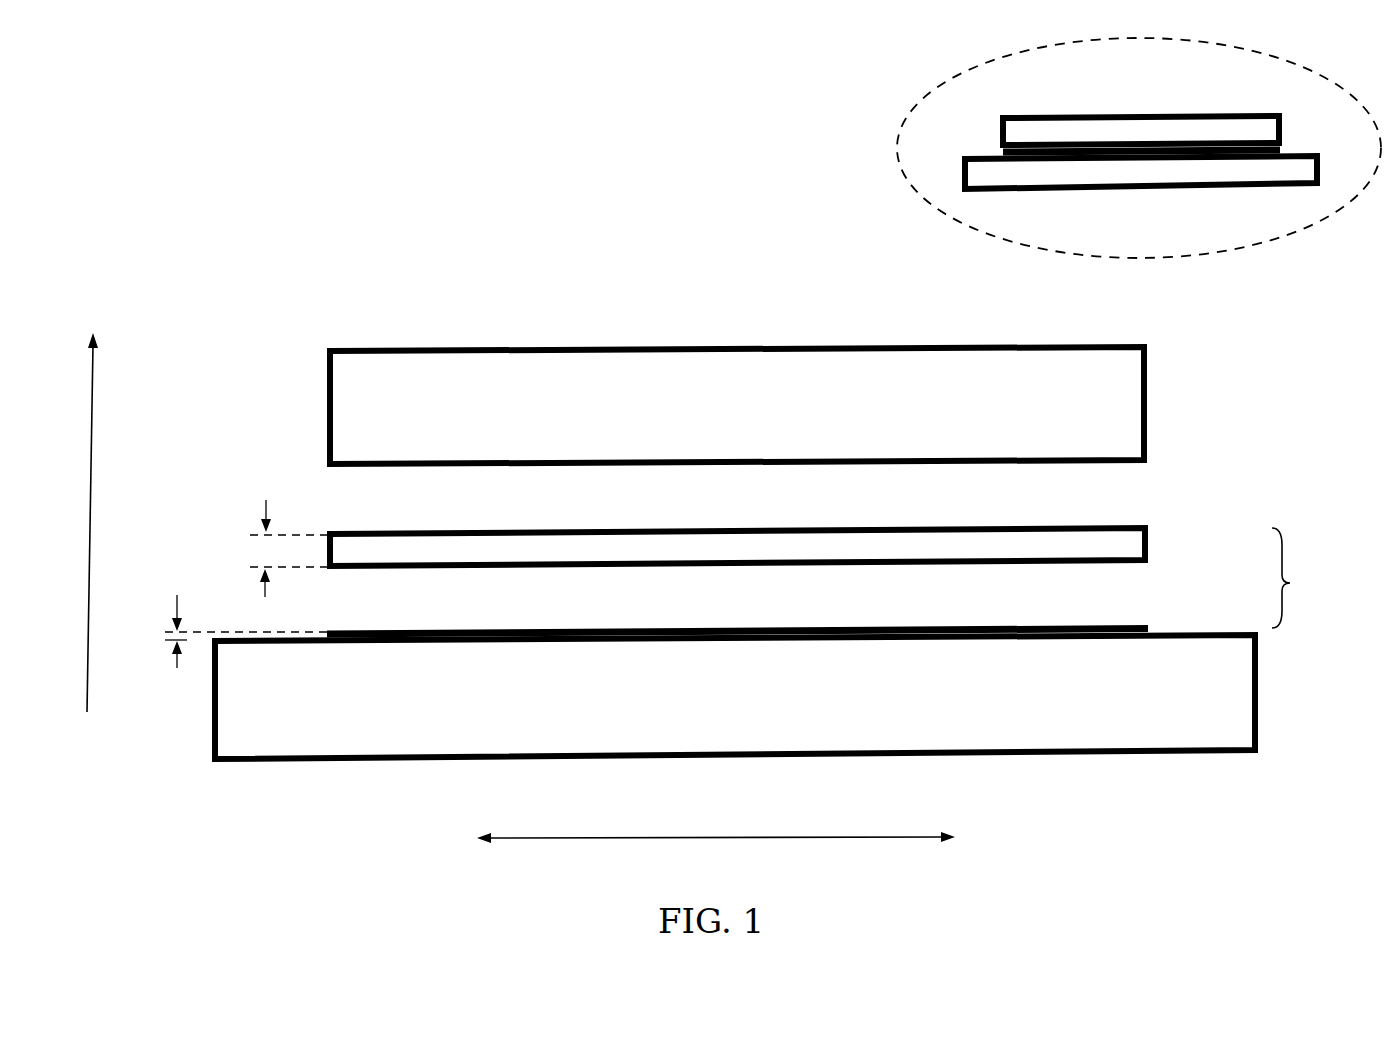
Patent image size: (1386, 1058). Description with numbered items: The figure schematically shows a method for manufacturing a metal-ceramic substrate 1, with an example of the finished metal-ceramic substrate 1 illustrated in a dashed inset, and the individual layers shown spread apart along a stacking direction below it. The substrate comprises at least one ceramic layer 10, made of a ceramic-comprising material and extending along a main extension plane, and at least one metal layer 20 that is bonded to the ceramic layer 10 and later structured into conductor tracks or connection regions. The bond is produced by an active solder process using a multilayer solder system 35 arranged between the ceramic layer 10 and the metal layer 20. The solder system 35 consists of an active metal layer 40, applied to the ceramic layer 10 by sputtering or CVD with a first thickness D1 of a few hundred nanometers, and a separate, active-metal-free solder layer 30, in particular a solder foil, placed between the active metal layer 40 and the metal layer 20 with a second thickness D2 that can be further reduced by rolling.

The metal-ceramic substrate 1 is at (962, 103).
The ceramic layer 10 is at (1187, 655).
The metal layer 20 is at (330, 390).
The solder layer 30 is at (1128, 538).
The solder system 35 is at (1297, 140).
The active metal layer 40 is at (1130, 625).
The first thickness D1 is at (177, 595).
The second thickness D2 is at (266, 500).